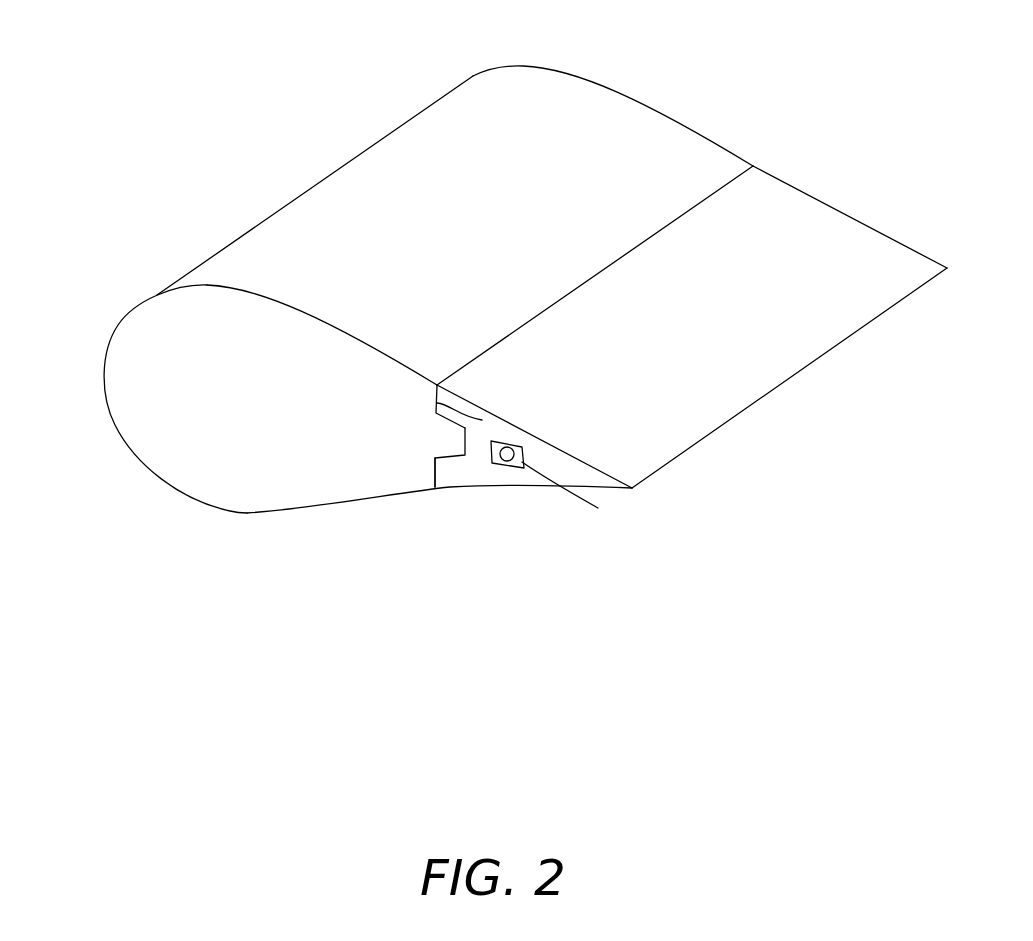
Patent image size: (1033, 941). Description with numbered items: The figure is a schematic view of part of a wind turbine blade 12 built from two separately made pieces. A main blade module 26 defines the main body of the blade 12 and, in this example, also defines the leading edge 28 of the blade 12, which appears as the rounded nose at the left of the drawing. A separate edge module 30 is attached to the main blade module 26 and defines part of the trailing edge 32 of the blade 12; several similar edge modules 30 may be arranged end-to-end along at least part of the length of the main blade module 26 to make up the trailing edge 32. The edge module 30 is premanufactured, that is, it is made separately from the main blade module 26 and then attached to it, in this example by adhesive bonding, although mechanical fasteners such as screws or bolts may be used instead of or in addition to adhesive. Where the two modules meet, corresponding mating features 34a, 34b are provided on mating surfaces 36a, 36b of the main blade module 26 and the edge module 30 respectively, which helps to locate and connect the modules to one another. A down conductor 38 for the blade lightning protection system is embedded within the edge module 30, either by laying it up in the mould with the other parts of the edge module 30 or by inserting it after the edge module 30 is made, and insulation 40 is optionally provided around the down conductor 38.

The wind turbine blade 12 is at (236, 70).
The main blade module 26 is at (572, 92).
The leading edge 28 is at (96, 372).
The edge module 30 is at (795, 210).
The trailing edge 32 is at (793, 377).
The mating feature 34a is at (436, 440).
The mating feature 34b is at (468, 466).
The mating surface 36a is at (435, 456).
The mating surface 36b is at (483, 417).
The down conductor 38 is at (508, 443).
The insulation 40 is at (580, 497).